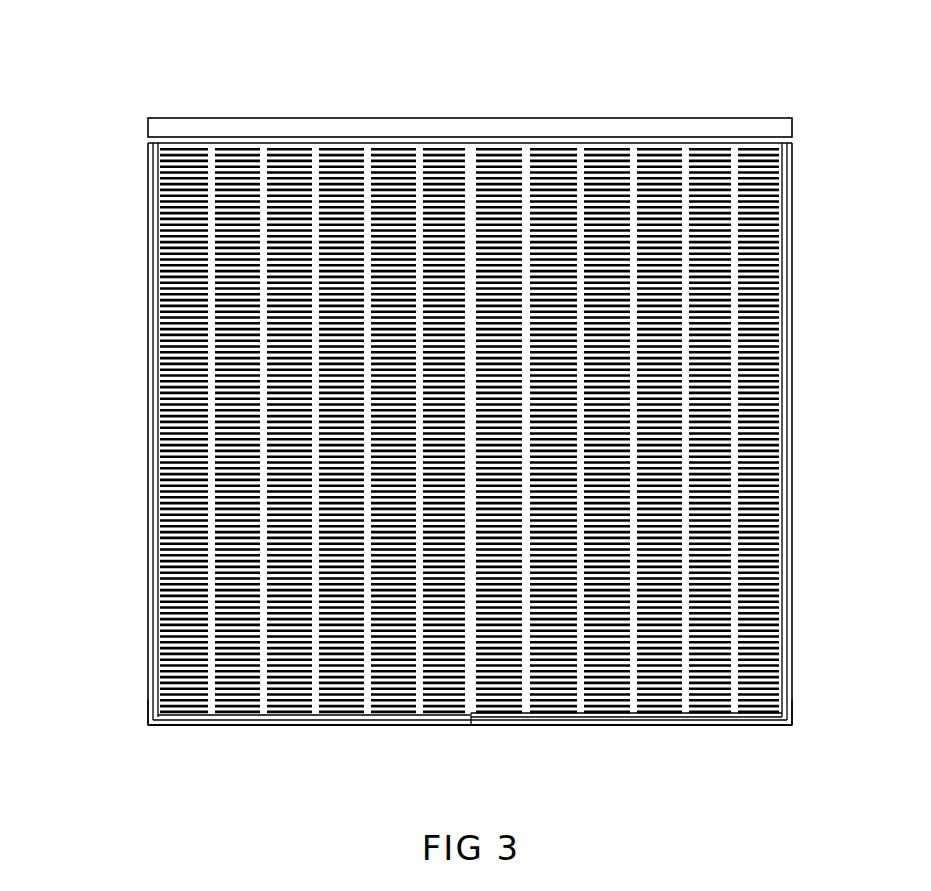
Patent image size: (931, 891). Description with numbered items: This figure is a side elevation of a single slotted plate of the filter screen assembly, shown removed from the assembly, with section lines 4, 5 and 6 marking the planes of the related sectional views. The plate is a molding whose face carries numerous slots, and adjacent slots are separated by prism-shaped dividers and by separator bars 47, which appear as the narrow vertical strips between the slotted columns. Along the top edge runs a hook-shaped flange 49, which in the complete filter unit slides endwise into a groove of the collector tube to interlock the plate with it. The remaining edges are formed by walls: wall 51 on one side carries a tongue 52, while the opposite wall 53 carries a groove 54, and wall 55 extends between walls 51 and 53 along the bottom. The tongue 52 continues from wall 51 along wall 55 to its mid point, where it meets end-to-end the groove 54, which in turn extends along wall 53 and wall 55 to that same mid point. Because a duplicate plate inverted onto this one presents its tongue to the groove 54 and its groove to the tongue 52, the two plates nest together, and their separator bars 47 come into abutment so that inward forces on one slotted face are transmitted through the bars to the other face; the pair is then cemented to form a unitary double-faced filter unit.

The separator bars 47 is at (684, 712).
The hook-shaped flange 49 is at (607, 125).
The wall 51 is at (150, 700).
The tongue 52 is at (155, 265).
The wall 53 is at (791, 703).
The groove 54 is at (788, 350).
The wall 55 is at (490, 727).
The section line 4- 4 is at (130, 545).
The section line 5- 5 is at (184, 168).
The section line 6- 6 is at (758, 167).